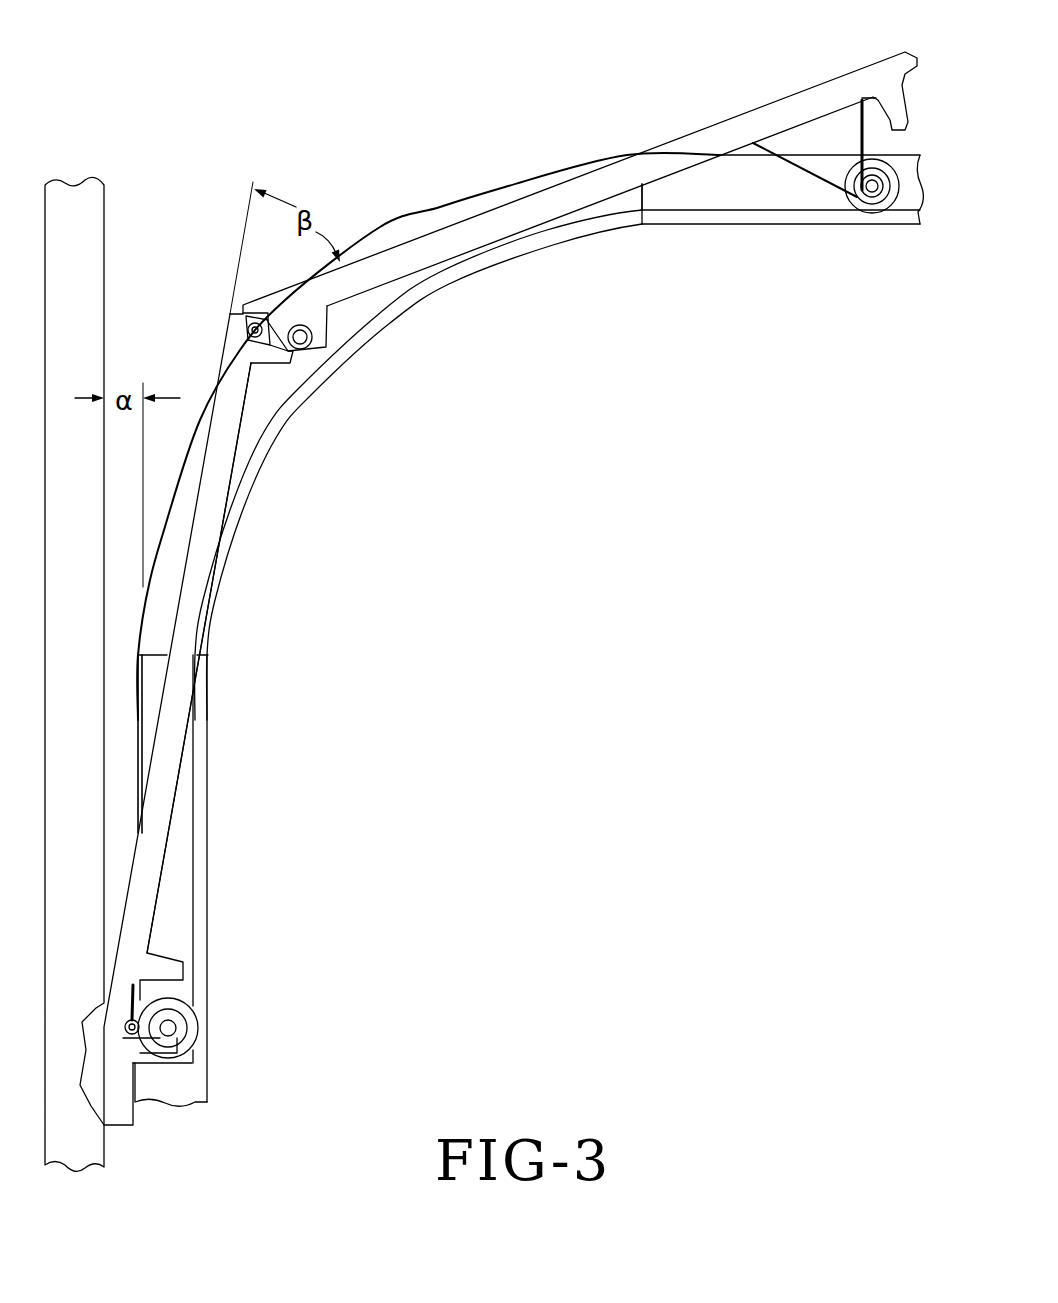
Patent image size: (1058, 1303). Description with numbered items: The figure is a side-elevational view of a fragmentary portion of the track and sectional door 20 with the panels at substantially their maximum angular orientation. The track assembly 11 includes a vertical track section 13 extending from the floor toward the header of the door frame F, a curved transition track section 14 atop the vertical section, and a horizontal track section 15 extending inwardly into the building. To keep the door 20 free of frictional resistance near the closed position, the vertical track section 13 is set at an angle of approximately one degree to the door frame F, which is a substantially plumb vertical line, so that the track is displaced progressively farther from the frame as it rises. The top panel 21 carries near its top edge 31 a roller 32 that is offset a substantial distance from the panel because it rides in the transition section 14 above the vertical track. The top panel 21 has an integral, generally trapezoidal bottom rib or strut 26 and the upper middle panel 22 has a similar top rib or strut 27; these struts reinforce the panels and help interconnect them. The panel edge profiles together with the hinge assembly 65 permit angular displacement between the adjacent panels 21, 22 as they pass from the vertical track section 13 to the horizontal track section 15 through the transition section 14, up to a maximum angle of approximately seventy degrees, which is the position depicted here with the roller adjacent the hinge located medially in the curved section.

The track assembly 11 is at (803, 228).
The vertical track section 13 is at (203, 793).
The curved transition track section 14 is at (440, 212).
The horizontal track section 15 is at (727, 198).
The sectional door 20 is at (246, 436).
The top panel 21 is at (372, 273).
The upper middle panel 22 is at (210, 548).
The bottom rib or strut 26 is at (325, 333).
The top rib or strut 27 is at (281, 363).
The top edge 31 is at (852, 136).
The roller 32 is at (900, 199).
The hinge assembly 65 is at (232, 331).
The door frame F is at (73, 222).